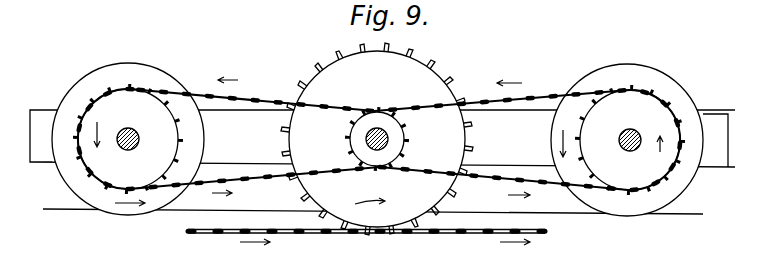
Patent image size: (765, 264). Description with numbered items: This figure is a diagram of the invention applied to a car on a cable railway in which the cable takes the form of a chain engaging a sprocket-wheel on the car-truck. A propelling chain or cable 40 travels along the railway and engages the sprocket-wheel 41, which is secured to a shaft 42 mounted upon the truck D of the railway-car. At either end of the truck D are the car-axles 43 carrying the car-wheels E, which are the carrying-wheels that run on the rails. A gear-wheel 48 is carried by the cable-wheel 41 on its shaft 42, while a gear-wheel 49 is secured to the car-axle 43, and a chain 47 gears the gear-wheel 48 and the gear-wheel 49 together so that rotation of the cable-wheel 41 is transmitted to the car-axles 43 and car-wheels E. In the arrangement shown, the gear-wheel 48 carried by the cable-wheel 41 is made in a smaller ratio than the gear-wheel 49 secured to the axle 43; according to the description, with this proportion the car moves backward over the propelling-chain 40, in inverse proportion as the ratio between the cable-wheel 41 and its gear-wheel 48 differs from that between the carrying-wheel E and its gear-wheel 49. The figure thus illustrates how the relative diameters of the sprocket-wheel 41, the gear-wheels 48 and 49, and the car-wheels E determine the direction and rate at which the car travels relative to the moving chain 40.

The propelling chain or cable 40 is at (366, 242).
The sprocket-wheel 41 is at (377, 139).
The shaft 42 is at (377, 129).
The car-axle 43 is at (128, 128).
The chain 47 is at (265, 99).
The gear-wheel 48 is at (405, 142).
The gear-wheel 49 is at (379, 140).
The truck D is at (382, 138).
The car-wheel E is at (377, 139).